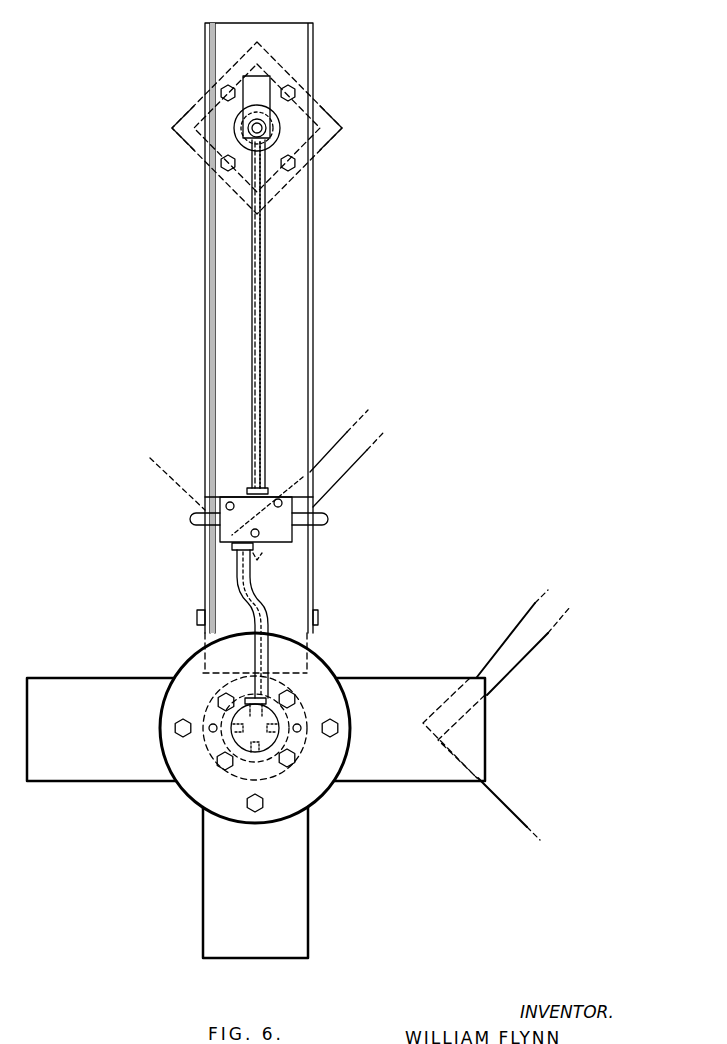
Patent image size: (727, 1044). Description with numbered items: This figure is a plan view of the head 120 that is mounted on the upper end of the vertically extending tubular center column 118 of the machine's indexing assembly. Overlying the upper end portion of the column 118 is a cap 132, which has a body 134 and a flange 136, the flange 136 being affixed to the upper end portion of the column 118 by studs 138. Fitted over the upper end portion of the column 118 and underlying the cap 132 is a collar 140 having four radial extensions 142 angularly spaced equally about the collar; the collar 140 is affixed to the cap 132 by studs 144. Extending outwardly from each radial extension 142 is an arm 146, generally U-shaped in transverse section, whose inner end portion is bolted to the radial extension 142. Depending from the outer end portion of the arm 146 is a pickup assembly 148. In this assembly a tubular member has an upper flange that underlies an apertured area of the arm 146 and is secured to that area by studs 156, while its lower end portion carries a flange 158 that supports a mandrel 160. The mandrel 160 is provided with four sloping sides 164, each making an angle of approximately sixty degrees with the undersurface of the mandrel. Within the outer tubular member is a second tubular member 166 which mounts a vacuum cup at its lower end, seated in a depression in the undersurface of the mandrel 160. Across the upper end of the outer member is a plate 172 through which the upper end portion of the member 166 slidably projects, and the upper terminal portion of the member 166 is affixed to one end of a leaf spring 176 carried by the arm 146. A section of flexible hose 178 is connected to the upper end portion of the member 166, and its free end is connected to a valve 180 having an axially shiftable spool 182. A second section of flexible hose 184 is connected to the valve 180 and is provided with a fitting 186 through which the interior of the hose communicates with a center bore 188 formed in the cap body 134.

The tubular center column 118 is at (220, 700).
The head 120 is at (180, 538).
The cap 132 is at (157, 707).
The cap body 134 is at (277, 718).
The flange 136 is at (345, 742).
The studs 138 is at (293, 760).
The collar 140 is at (298, 774).
The radial extension 142 is at (103, 772).
The studs 144 is at (263, 802).
The arm 146 is at (313, 263).
The pickup assembly 148 is at (286, 122).
The studs 156 is at (296, 92).
The flange 158 is at (316, 128).
The mandrel 160 is at (190, 134).
The sloping sides 164 is at (198, 102).
The second tubular member 166 is at (236, 168).
The plate 172 is at (266, 140).
The leaf spring 176 is at (264, 84).
The flexible hose 178 is at (258, 338).
The valve 180 is at (272, 498).
The spool 182 is at (323, 527).
The flexible hose 184 is at (255, 602).
The fitting 186 is at (262, 700).
The center bore 188 is at (210, 754).